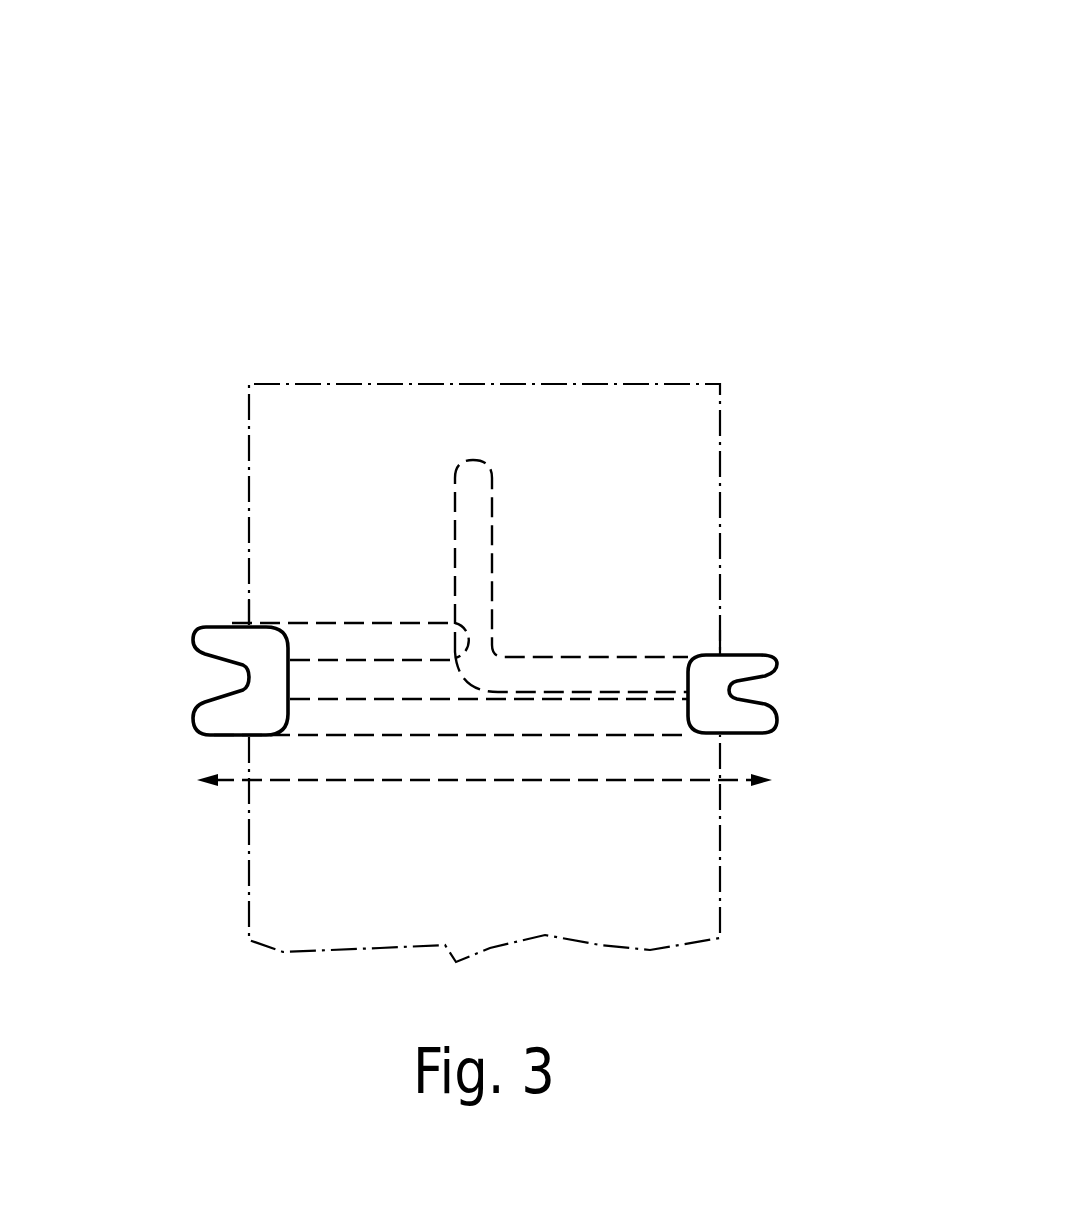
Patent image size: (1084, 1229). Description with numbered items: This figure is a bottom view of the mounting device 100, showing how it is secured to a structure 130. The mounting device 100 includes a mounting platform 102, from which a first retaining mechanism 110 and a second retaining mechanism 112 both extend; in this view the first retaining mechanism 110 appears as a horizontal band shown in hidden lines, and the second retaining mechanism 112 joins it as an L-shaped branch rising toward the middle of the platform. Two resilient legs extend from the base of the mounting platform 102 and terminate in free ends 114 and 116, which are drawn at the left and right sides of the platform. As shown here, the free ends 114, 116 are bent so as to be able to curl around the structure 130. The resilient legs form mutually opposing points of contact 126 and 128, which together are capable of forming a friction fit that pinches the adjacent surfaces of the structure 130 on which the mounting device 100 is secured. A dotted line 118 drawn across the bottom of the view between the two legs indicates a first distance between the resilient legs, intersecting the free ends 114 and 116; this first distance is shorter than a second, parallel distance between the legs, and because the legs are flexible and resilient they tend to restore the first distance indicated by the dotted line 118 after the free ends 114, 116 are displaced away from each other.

The mounting device 100 is at (640, 135).
The mounting platform 102 is at (592, 734).
The first retaining mechanism 110 is at (366, 615).
The second retaining mechanism 112 is at (497, 510).
The free end 114 is at (195, 652).
The free end 116 is at (752, 678).
The dotted line 118 is at (373, 782).
The point of contact 126 is at (236, 612).
The point of contact 128 is at (728, 653).
The structure 130 is at (632, 577).